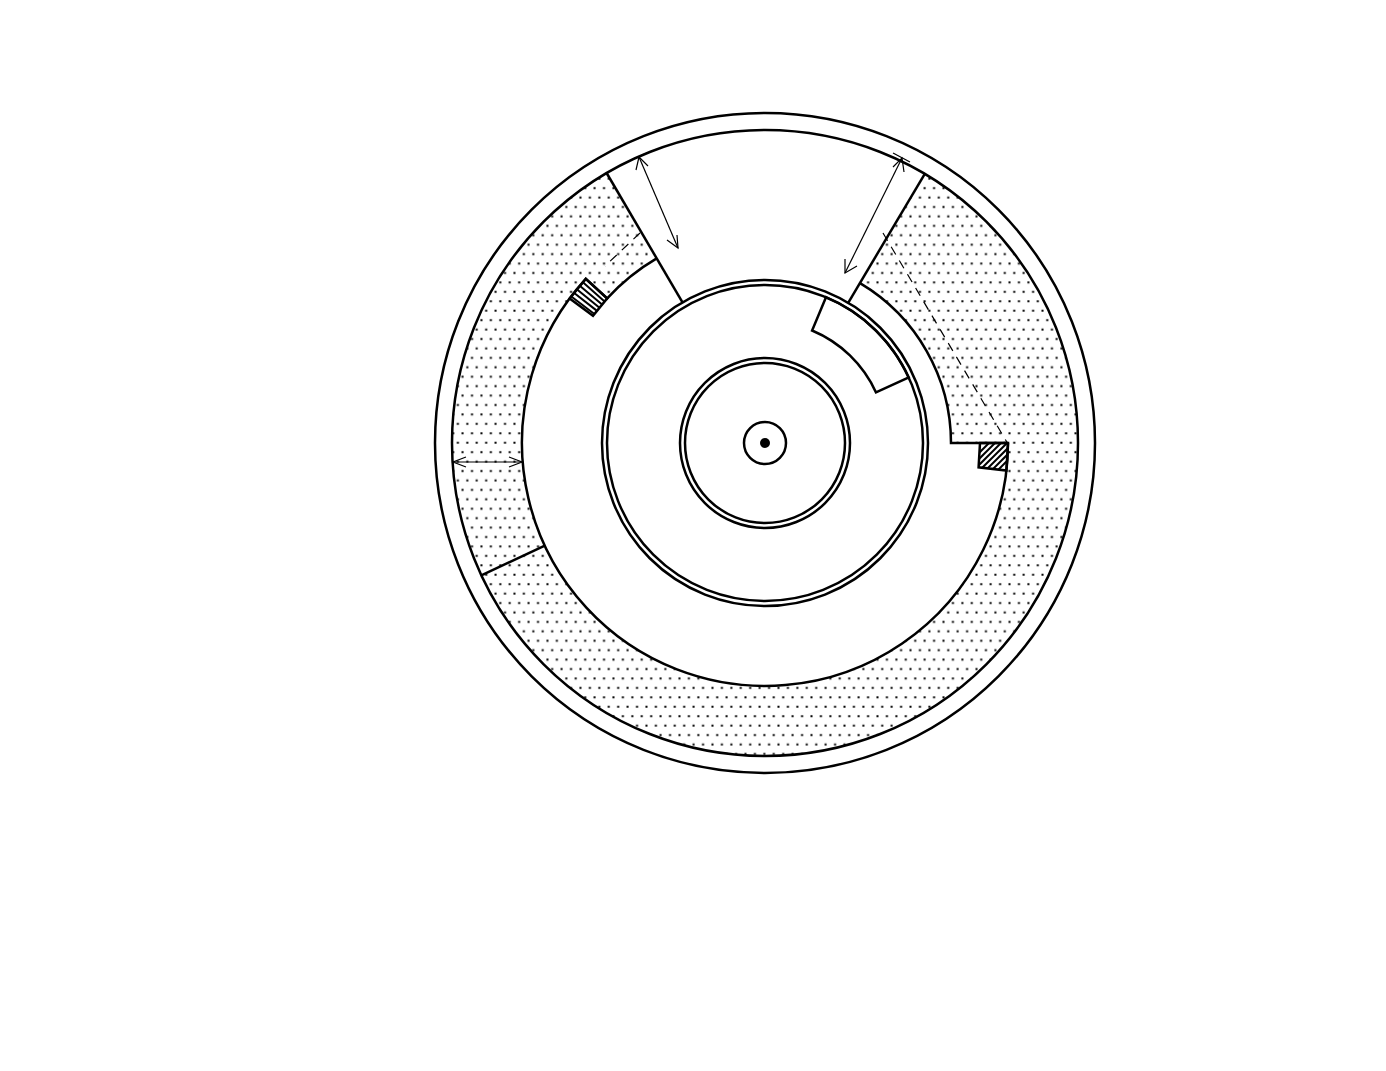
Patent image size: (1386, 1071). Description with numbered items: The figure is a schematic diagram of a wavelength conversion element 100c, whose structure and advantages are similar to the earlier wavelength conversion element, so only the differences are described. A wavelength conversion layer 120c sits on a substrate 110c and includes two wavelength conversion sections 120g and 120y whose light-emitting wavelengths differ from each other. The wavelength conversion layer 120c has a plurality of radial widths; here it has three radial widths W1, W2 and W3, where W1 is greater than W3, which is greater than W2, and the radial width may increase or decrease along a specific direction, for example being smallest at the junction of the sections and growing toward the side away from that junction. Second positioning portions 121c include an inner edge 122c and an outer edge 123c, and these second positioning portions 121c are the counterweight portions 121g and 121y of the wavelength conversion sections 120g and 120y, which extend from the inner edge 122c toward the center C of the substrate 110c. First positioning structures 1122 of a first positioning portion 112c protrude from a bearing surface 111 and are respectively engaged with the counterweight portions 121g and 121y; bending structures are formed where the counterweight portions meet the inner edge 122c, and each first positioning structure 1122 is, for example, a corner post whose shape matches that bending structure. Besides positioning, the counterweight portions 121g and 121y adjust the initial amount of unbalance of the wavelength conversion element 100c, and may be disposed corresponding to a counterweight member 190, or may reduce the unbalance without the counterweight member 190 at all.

The wavelength conversion element 100c is at (362, 155).
The substrate 110c is at (800, 112).
The bearing surface 111 is at (940, 543).
The first positioning structures 1122 is at (567, 282).
The first positioning portion 112c is at (780, 379).
The wavelength conversion layer 120c is at (701, 494).
The wavelength conversion section 120g is at (490, 505).
The wavelength conversion section 120y is at (761, 599).
The second positioning portions 121c is at (776, 308).
The counterweight portion 121g is at (605, 277).
The counterweight portion 121y is at (1086, 309).
The inner edge 122c is at (1003, 512).
The outer edge 123c is at (1030, 268).
The counterweight member 190 is at (867, 345).
The center C is at (770, 450).
The radial width W1 is at (878, 203).
The radial width W2 is at (485, 462).
The radial width W3 is at (657, 190).